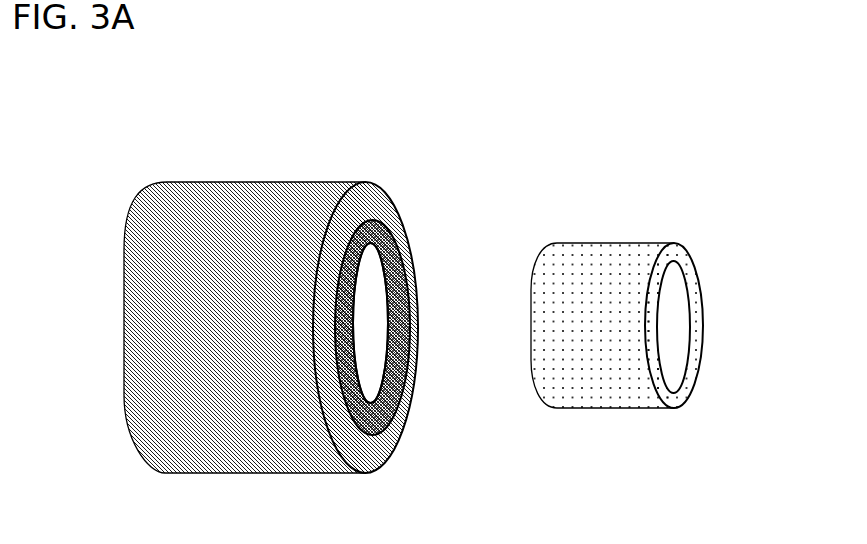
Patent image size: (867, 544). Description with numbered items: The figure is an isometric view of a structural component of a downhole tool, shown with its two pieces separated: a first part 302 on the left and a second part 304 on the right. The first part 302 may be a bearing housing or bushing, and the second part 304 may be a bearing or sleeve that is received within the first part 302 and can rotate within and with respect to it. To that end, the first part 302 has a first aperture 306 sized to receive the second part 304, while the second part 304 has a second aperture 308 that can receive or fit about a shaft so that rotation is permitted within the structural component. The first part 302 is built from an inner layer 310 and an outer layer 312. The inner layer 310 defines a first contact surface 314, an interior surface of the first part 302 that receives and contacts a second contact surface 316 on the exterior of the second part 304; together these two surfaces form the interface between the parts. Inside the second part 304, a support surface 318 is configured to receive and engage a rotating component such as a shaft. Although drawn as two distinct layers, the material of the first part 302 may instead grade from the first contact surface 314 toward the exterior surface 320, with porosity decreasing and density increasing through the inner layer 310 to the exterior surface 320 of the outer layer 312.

The first part 302 is at (276, 339).
The second part 304 is at (681, 291).
The first aperture 306 is at (369, 333).
The second aperture 308 is at (677, 334).
The inner layer 310 is at (386, 238).
The outer layer 312 is at (387, 217).
The first contact surface 314 is at (370, 307).
The second contact surface 316 is at (606, 327).
The support surface 318 is at (673, 307).
The exterior surface 320 is at (207, 452).